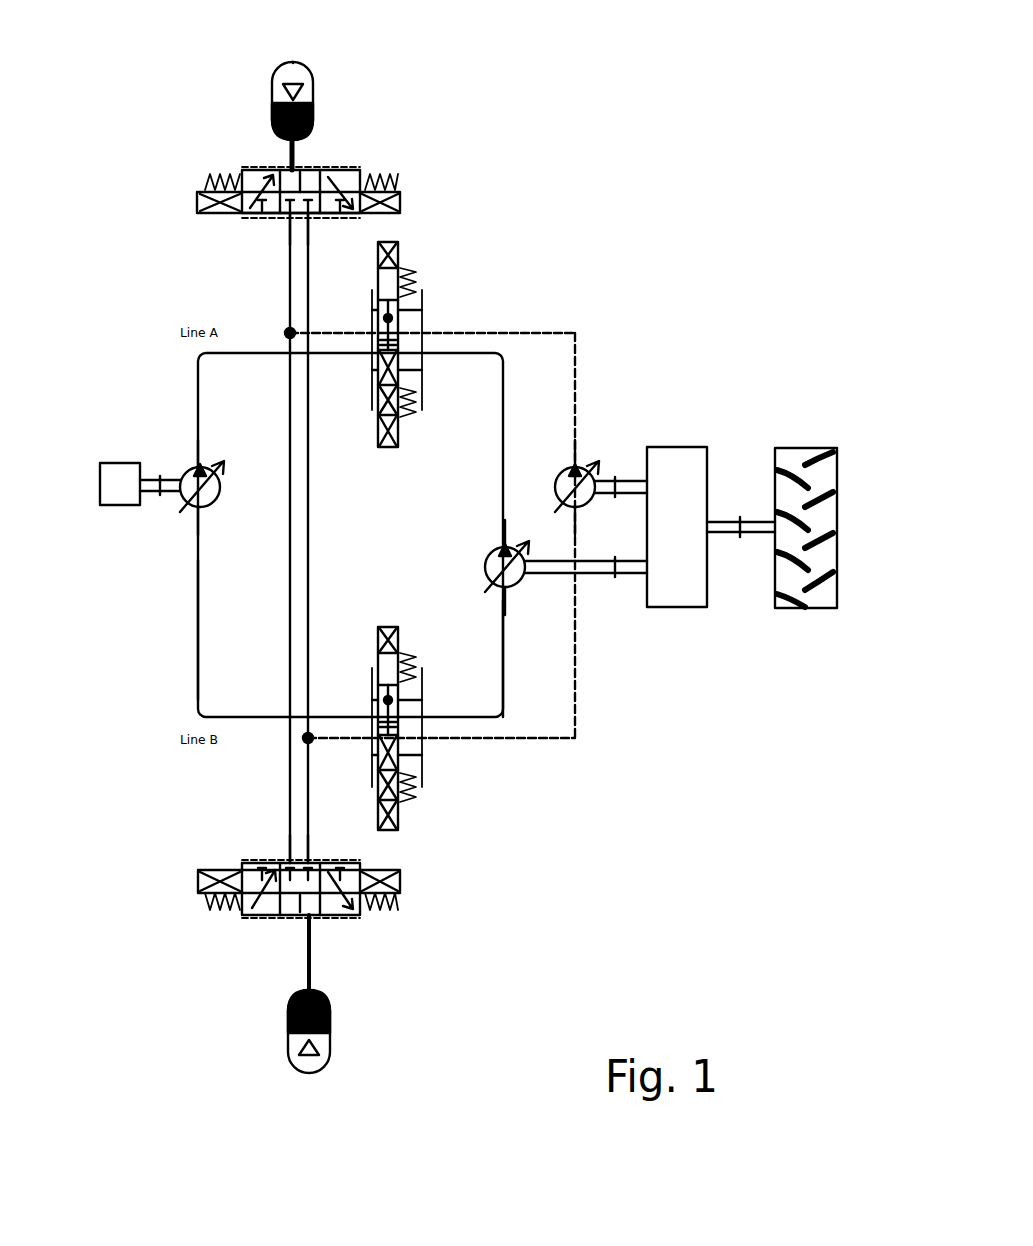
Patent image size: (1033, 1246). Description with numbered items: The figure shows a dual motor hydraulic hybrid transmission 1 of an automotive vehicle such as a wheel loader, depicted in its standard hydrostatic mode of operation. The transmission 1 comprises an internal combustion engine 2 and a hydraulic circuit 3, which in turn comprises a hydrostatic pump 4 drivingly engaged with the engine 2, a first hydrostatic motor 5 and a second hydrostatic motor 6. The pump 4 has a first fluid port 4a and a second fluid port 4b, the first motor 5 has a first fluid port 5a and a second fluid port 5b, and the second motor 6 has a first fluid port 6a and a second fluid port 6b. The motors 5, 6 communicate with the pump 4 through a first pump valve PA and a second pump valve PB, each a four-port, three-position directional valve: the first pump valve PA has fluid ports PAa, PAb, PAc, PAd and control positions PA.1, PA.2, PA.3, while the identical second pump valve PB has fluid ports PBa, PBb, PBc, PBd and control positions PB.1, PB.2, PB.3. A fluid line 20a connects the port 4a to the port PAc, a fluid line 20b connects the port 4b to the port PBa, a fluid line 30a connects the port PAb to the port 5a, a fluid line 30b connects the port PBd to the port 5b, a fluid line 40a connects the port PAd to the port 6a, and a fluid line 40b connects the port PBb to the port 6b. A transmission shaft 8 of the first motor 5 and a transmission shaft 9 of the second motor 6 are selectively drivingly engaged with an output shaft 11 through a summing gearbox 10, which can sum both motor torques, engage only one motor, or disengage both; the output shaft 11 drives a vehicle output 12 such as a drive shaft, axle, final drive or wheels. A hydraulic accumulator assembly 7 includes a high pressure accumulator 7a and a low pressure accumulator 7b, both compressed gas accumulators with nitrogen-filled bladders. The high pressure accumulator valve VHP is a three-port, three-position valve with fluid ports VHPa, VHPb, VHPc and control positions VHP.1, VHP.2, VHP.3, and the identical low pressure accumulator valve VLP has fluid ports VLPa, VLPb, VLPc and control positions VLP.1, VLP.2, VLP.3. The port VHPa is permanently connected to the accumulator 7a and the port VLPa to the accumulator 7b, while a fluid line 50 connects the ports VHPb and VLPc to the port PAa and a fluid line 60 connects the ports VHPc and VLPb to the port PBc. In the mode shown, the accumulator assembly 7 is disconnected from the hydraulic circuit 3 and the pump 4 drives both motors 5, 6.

The dual motor hydraulic hybrid transmission 1 is at (629, 78).
The internal combustion engine 2 is at (120, 506).
The hydraulic circuit 3 is at (567, 868).
The hydrostatic pump 4 is at (222, 487).
The first fluid port 4a is at (204, 465).
The second fluid port 4b is at (208, 507).
The first hydrostatic motor 5 is at (555, 487).
The first fluid port 5a is at (573, 468).
The second fluid port 5b is at (583, 503).
The second hydrostatic motor 6 is at (485, 568).
The first fluid port 6a is at (503, 547).
The second fluid port 6b is at (508, 588).
The hydraulic accumulator assembly 7 is at (410, 54).
The high pressure accumulator 7a is at (304, 62).
The low pressure accumulator 7b is at (318, 1068).
The transmission shaft 8 is at (627, 478).
The transmission shaft 9 is at (598, 576).
The summing gearbox 10 is at (680, 446).
The output shaft 11 is at (745, 535).
The vehicle output 12 is at (806, 608).
The fluid line 20a is at (195, 390).
The fluid line 20b is at (198, 612).
The fluid line 30a is at (578, 348).
The fluid line 30b is at (534, 740).
The fluid line 40a is at (563, 440).
The fluid line 40b is at (505, 668).
The fluid line 50 is at (290, 618).
The fluid line 60 is at (309, 555).
The high pressure accumulator valve VHP is at (200, 116).
The control position VHP.1 is at (260, 185).
The control position VHP.2 is at (197, 197).
The control position VHP.3 is at (362, 178).
The first fluid port VHPa is at (310, 165).
The second fluid port VHPb is at (288, 222).
The third fluid port VHPc is at (312, 220).
The first pump valve PA is at (504, 254).
The control position PA.1 is at (420, 327).
The control position PA.2 is at (388, 447).
The control position PA.3 is at (400, 262).
The first fluid port PAa is at (373, 327).
The second fluid port PAb is at (415, 322).
The third fluid port PAc is at (373, 360).
The fourth fluid port PAd is at (423, 358).
The second pump valve PB is at (456, 796).
The control position PB.1 is at (440, 734).
The control position PB.2 is at (398, 800).
The control position PB.3 is at (386, 628).
The first fluid port PBa is at (375, 715).
The second fluid port PBb is at (423, 717).
The third fluid port PBc is at (372, 745).
The fourth fluid port PBd is at (425, 740).
The low pressure accumulator valve VLP is at (166, 972).
The control position VLP.1 is at (290, 917).
The control position VLP.2 is at (400, 905).
The control position VLP.3 is at (198, 888).
The first fluid port VLPa is at (320, 917).
The second fluid port VLPb is at (310, 858).
The third fluid port VLPc is at (290, 852).